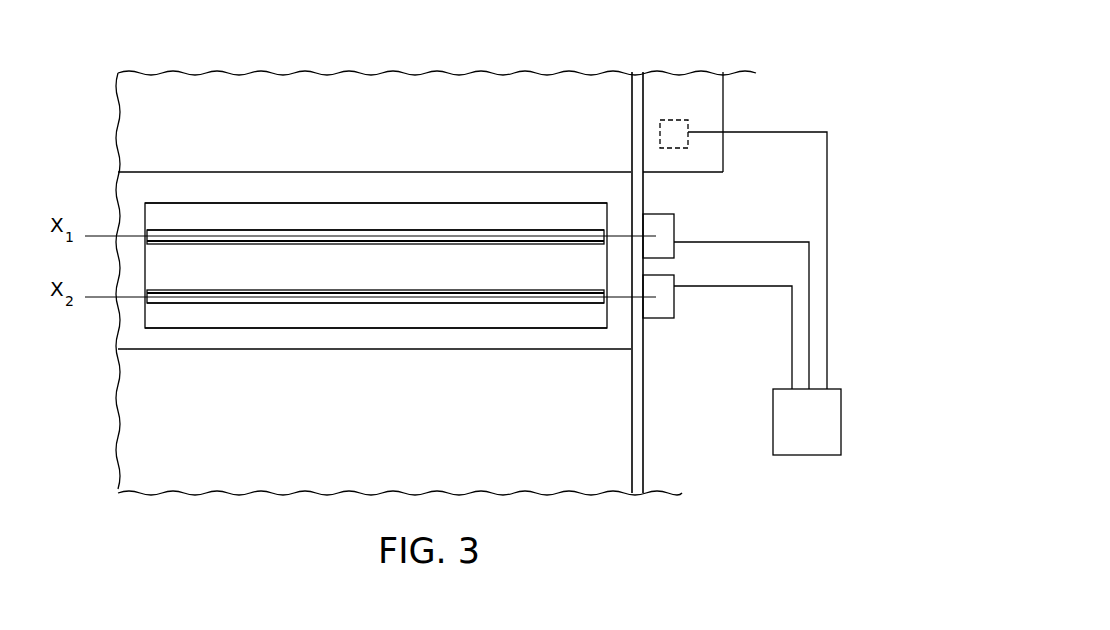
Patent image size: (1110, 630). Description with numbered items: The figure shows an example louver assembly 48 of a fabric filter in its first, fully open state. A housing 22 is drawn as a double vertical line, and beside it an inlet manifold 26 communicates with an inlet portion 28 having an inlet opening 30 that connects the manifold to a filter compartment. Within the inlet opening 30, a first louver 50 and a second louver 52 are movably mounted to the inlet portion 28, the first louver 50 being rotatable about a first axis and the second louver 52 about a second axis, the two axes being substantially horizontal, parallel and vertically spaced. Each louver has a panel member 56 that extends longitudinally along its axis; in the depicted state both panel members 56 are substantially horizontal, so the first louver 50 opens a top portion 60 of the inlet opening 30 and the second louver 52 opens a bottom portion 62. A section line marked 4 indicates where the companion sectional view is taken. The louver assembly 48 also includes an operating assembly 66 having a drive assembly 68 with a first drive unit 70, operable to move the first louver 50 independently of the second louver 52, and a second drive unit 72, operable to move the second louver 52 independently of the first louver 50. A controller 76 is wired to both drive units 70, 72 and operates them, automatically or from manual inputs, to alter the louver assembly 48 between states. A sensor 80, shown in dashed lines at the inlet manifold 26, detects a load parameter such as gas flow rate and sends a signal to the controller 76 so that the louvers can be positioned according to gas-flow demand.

The section line 4- 4 is at (227, 377).
The housing 22 is at (643, 435).
The inlet manifold 26 is at (723, 117).
The inlet portion 28 is at (488, 349).
The inlet opening 30 is at (553, 203).
The louver assembly 48 is at (582, 365).
The first louver 50 is at (383, 232).
The second louver 52 is at (370, 303).
The panel member 56 is at (310, 230).
The top portion 60 is at (467, 203).
The bottom portion 62 is at (409, 328).
The operating assembly 66 is at (858, 114).
The drive assembly 68 is at (746, 221).
The first drive unit 70 is at (674, 222).
The second drive unit 72 is at (659, 318).
The controller 76 is at (808, 455).
The sensor 80 is at (680, 120).